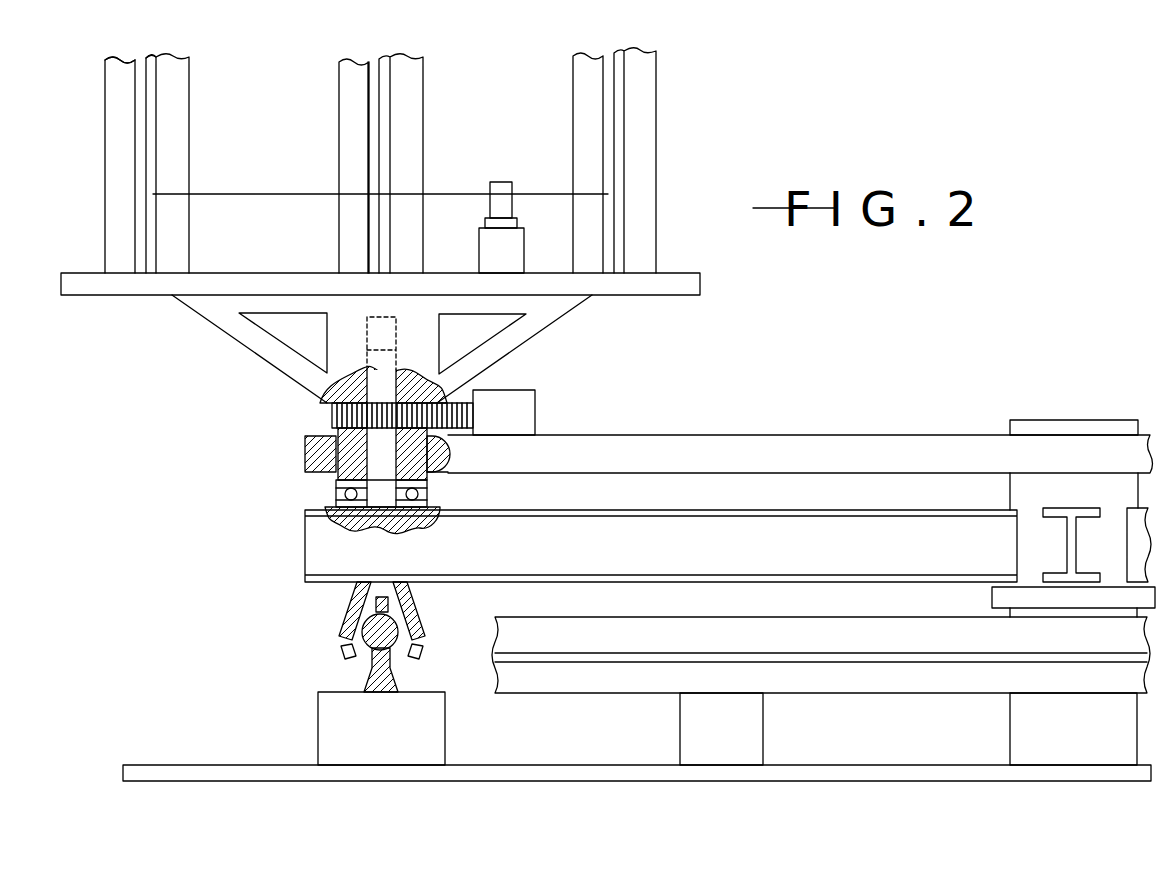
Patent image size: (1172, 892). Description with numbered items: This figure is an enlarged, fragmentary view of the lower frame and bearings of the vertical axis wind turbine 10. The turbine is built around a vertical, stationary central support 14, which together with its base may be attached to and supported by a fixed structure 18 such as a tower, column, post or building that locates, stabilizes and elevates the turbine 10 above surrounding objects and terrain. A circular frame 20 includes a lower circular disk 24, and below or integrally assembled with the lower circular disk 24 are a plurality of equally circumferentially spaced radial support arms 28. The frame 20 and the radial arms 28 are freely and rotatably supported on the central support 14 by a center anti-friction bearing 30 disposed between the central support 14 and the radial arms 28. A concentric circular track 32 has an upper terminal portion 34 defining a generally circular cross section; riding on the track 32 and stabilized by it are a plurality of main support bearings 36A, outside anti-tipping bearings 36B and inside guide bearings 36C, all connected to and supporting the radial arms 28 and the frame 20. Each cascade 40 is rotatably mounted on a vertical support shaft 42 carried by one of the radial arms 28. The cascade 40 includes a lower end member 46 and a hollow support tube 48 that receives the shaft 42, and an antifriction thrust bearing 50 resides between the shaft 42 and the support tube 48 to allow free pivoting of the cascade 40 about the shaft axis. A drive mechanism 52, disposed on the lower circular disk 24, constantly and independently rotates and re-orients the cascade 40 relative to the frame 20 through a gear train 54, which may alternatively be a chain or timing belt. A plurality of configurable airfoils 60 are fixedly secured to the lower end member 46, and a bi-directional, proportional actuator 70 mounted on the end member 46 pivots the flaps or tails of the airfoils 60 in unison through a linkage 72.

The vertical axis wind turbine 10 is at (1015, 333).
The central support 14 is at (1064, 730).
The structure 18 is at (620, 772).
The circular frame 20 is at (277, 452).
The lower circular disk 24 is at (692, 452).
The radial support arm 28 is at (318, 548).
The center anti-friction bearing 30 is at (1033, 597).
The circular track 32 is at (382, 680).
The upper terminal portion 34 is at (408, 613).
The main support bearing 36A is at (355, 588).
The outside anti-tipping bearing 36B is at (357, 657).
The inside guide bearing 36C is at (415, 655).
The cascade 40 is at (690, 156).
The vertical support shaft 42 is at (378, 452).
The lower end member 46 is at (238, 278).
The hollow support tube 48 is at (415, 457).
The antifriction thrust bearing 50 is at (337, 482).
The drive mechanism 52 is at (505, 405).
The gear train 54 is at (455, 400).
The configurable airfoil 60 is at (583, 132).
The actuator 70 is at (509, 244).
The linkage 72 is at (240, 193).